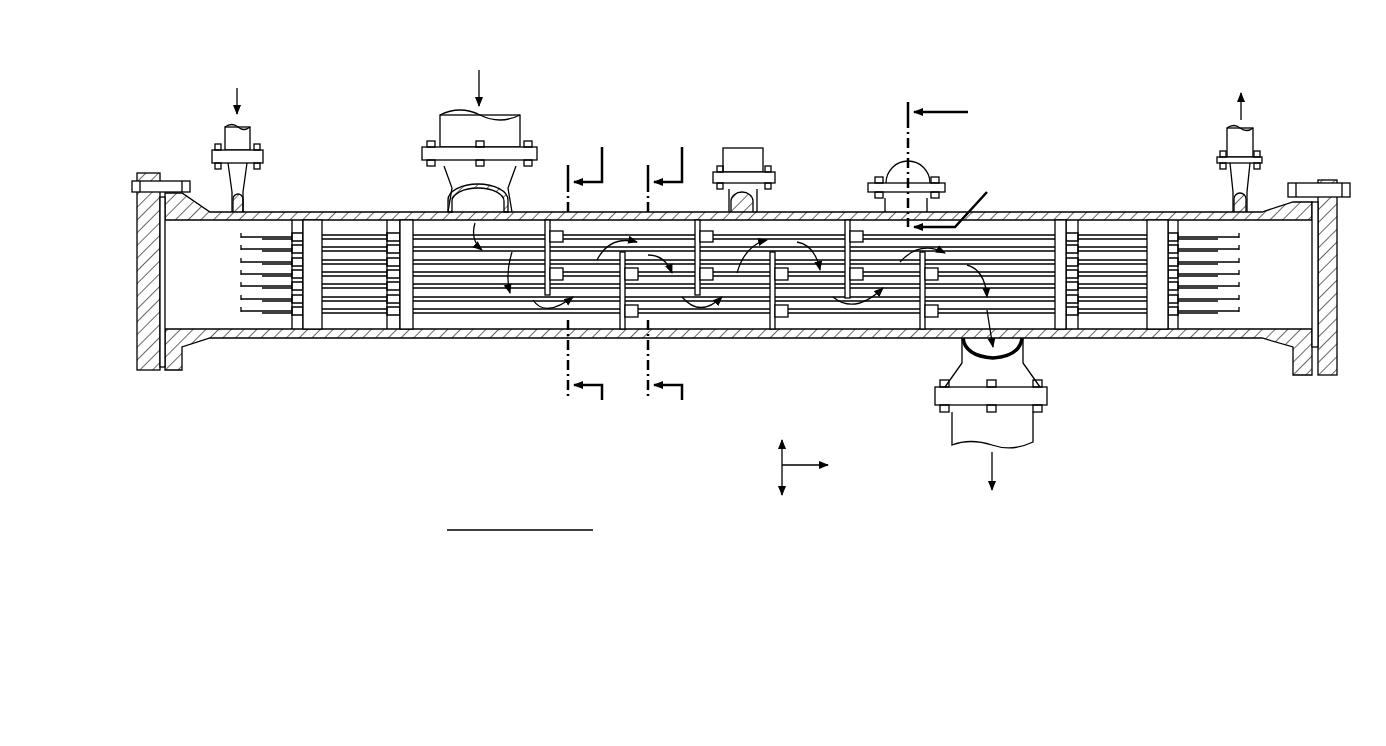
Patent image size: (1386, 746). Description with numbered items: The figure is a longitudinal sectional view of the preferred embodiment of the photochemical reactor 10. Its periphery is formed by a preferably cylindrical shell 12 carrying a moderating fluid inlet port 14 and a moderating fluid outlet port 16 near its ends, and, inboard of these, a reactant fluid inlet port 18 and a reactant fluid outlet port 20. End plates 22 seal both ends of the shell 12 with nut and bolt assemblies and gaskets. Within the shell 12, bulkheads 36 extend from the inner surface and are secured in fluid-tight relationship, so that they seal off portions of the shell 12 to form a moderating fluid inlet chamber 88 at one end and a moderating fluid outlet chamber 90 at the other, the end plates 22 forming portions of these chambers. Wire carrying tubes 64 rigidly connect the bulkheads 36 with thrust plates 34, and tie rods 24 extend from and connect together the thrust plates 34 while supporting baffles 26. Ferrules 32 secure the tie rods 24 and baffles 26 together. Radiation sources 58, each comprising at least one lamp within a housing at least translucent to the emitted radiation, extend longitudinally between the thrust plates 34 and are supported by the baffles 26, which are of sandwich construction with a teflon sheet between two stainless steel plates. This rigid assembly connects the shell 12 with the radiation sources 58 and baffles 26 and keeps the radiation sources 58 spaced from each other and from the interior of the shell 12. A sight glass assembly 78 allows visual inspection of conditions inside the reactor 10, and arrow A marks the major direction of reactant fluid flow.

The photochemical reactor 10 is at (1041, 200).
The shell 12 is at (1117, 212).
The moderating fluid inlet port 14 is at (248, 197).
The moderating fluid outlet port 16 is at (1251, 188).
The reactant fluid inlet port 18 is at (440, 195).
The reactant fluid outlet port 20 is at (1025, 352).
The end plate 22 is at (136, 265).
The tie rod 24 is at (452, 272).
The baffle 26 is at (547, 220).
The ferrule 32 is at (562, 270).
The thrust plate 34 is at (405, 322).
The bulkhead 36 is at (312, 318).
The radiation source 58 is at (528, 285).
The wire carrying tube 64 is at (343, 315).
The sight glass assembly 78 is at (892, 160).
The moderating fluid inlet chamber 88 is at (188, 282).
The moderating fluid outlet chamber 90 is at (1280, 313).